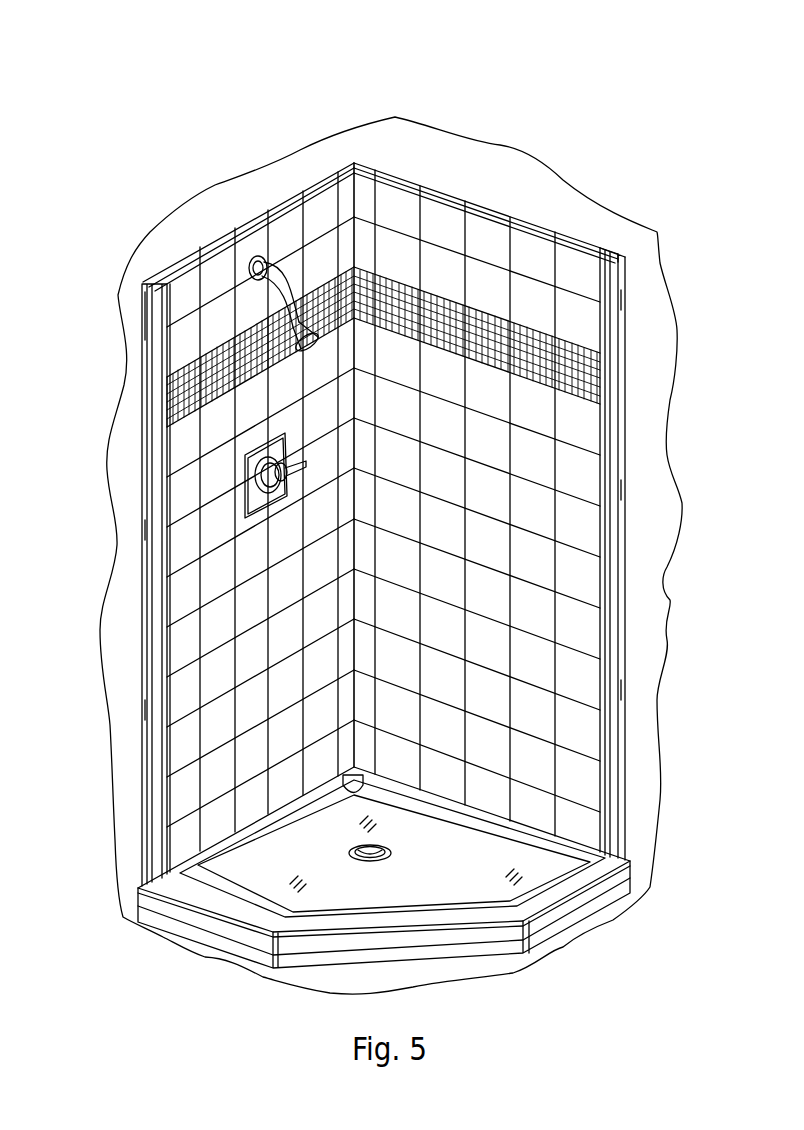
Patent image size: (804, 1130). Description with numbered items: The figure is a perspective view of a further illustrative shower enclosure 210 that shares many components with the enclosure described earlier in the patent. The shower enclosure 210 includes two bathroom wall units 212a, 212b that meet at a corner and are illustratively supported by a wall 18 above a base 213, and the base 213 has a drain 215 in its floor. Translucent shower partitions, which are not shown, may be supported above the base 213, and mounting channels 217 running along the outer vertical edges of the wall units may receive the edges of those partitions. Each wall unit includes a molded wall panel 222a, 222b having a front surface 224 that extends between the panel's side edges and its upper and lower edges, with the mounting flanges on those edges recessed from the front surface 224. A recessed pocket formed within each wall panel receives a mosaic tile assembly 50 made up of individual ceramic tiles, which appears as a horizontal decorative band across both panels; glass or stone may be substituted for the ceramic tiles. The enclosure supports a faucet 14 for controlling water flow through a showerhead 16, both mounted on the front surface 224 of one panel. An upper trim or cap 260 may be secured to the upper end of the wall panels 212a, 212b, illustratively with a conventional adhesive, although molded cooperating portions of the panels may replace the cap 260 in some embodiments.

The shower enclosure 210 is at (651, 95).
The upper trim or cap 260 is at (355, 163).
The bathroom wall unit 212a is at (210, 238).
The bathroom wall unit 212b is at (493, 190).
The molded wall panel 222a is at (225, 512).
The molded wall panel 222b is at (583, 628).
The wall 18 is at (670, 228).
The mounting channel 217 is at (160, 313).
The mosaic tile assembly 50 is at (165, 402).
The showerhead 16 is at (281, 300).
The faucet 14 is at (243, 507).
The front surface 224 is at (180, 697).
The base 213 is at (207, 917).
The drain 215 is at (392, 848).